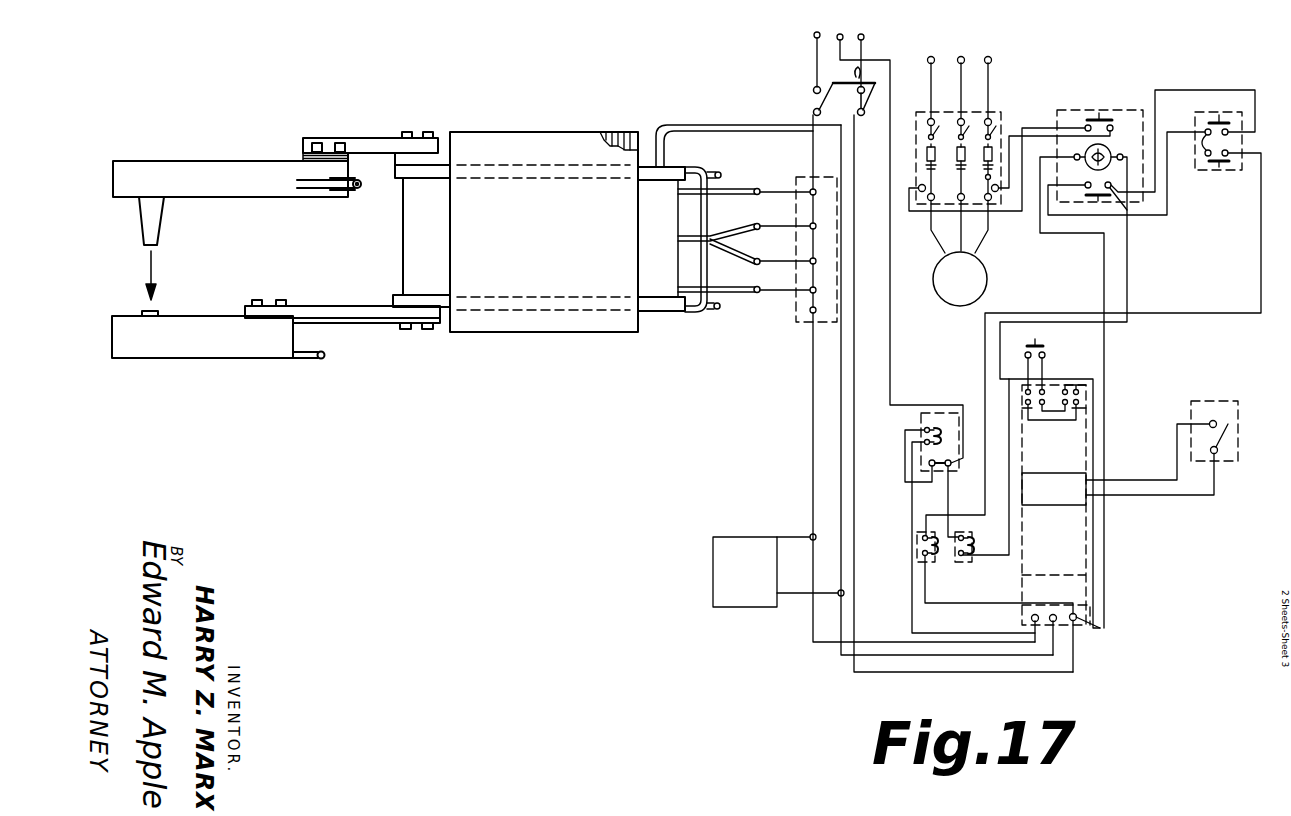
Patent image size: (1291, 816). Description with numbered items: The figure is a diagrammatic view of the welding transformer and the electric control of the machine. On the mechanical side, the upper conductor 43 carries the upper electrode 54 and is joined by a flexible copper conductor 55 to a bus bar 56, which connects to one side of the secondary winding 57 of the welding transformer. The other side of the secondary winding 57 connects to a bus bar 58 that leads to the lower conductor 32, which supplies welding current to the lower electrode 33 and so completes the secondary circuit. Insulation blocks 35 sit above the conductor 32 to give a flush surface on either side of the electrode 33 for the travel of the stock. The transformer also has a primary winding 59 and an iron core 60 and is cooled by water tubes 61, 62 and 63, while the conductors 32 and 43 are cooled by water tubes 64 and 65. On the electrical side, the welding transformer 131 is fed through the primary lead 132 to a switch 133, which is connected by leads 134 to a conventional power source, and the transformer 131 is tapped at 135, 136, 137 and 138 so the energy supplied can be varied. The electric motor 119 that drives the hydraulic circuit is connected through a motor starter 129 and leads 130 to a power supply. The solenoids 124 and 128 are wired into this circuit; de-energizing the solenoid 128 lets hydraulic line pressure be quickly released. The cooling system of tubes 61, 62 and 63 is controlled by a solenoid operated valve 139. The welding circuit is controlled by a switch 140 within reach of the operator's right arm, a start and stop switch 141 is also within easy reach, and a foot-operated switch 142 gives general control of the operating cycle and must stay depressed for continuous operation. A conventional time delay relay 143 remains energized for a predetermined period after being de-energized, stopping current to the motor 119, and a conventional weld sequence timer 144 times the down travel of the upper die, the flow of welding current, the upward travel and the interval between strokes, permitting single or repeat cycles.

The conductor 32 is at (295, 328).
The lower electrode 33 is at (152, 310).
The insulation blocks 35 is at (210, 315).
The upper conductor 43 is at (234, 192).
The electrode 54 is at (156, 226).
The flexible copper conductor 55 is at (302, 156).
The bus bar 56 is at (364, 137).
The secondary winding 57 is at (398, 168).
The bus bar 58 is at (311, 306).
The primary winding 59 is at (410, 218).
The iron core 60 is at (525, 322).
The water tube 61 is at (716, 171).
The water tube 62 is at (713, 311).
The water tube 63 is at (700, 266).
The water tube 64 is at (340, 190).
The water tube 65 is at (311, 360).
The electric motor 119 is at (988, 281).
The solenoid 124 is at (970, 565).
The solenoid 128 is at (925, 565).
The motor starter 129 is at (1004, 111).
The leads 130 is at (934, 58).
The welding transformer 131 is at (629, 133).
The primary lead 132 is at (708, 125).
The switch 133 is at (872, 101).
The leads 134 is at (820, 33).
The tap 135 is at (729, 191).
The tap 136 is at (723, 229).
The tap 137 is at (723, 259).
The tap 138 is at (735, 293).
The solenoid operated valve 139 is at (947, 424).
The switch 140 is at (1232, 464).
The start and stop switch 141 is at (1236, 144).
The switch 142 is at (1045, 353).
The time delay relay 143 is at (1102, 110).
The weld sequence timer 144 is at (740, 541).